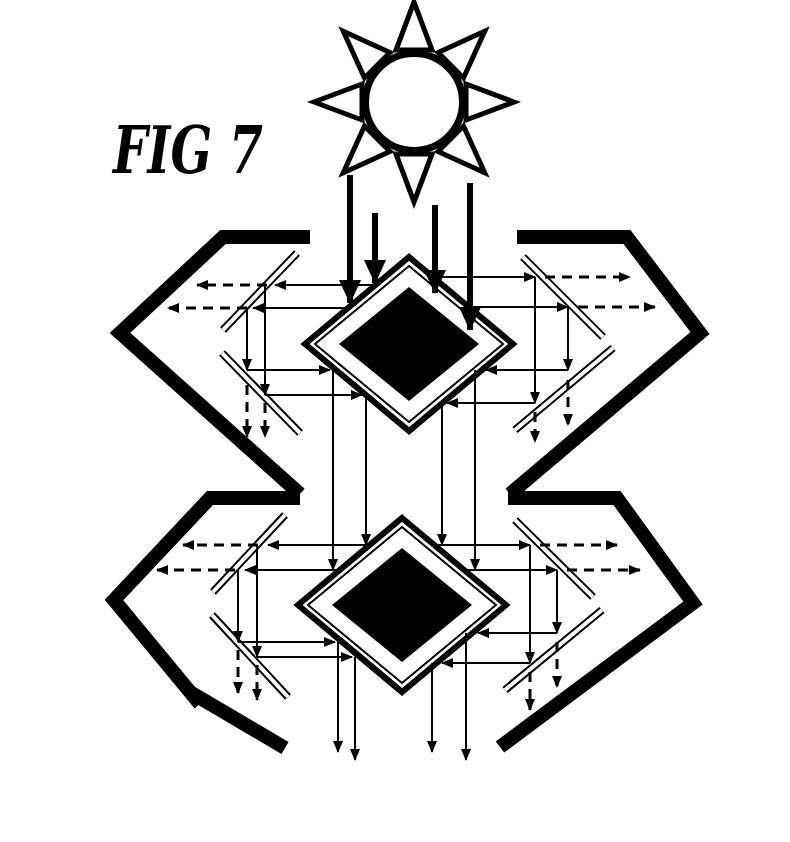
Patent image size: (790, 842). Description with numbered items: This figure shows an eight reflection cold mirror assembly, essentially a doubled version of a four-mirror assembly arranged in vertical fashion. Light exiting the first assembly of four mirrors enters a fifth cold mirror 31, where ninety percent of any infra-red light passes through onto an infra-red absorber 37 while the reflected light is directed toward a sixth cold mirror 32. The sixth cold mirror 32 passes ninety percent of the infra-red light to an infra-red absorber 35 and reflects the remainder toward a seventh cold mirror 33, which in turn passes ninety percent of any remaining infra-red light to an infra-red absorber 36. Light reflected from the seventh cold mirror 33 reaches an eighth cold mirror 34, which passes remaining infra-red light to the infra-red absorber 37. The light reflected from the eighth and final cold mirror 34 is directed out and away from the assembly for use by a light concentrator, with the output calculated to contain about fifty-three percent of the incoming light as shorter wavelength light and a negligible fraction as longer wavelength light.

The fifth cold mirror 31 is at (380, 521).
The sixth cold mirror 32 is at (273, 520).
The seventh cold mirror 33 is at (215, 620).
The eighth cold mirror 34 is at (383, 685).
The infra-red absorber 35 is at (172, 522).
The infra-red absorber 36 is at (237, 720).
The infra-red absorber 37 is at (342, 613).